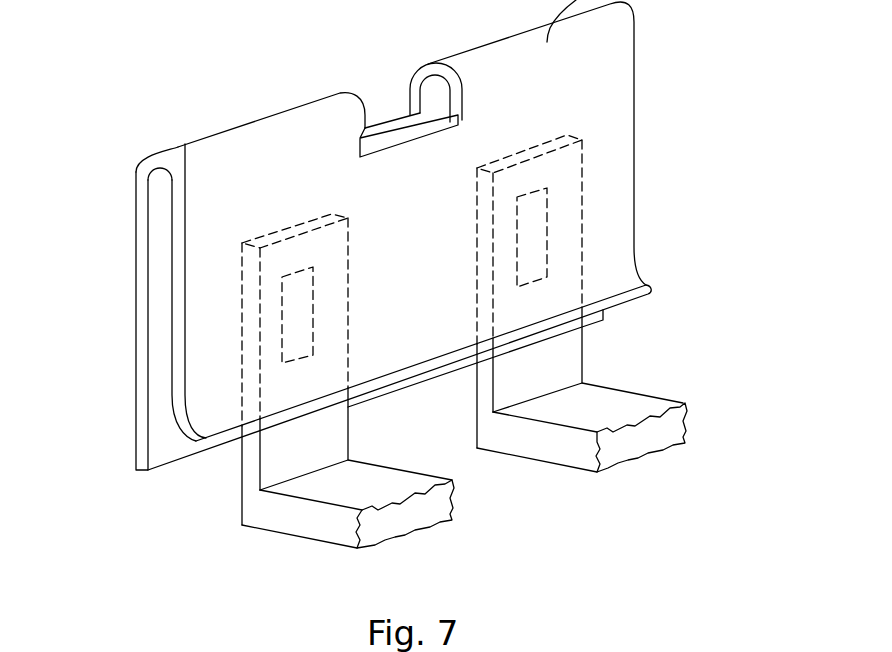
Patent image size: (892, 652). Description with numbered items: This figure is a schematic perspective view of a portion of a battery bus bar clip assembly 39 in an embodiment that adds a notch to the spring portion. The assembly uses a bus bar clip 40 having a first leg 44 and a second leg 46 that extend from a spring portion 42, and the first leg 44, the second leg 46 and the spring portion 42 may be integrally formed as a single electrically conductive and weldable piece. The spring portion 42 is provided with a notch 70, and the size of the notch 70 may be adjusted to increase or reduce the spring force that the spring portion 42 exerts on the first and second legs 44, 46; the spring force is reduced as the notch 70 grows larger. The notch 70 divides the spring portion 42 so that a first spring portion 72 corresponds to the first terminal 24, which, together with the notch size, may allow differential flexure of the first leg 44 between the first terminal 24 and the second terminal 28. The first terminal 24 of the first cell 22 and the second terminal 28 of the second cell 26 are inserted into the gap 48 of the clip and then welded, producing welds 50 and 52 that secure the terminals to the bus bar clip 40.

The battery bus bar clip assembly 39 is at (680, 52).
The bus bar clip 40 is at (212, 85).
The spring portion 42 is at (293, 158).
The first leg 44 is at (607, 233).
The second leg 46 is at (157, 303).
The gap 48 is at (173, 447).
The weld 50 is at (290, 323).
The weld 52 is at (533, 248).
The notch 70 is at (387, 113).
The first spring portion 72 is at (217, 163).
The first terminal 24 is at (294, 440).
The second terminal 28 is at (557, 362).
The first cell 22 is at (363, 497).
The second cell 26 is at (605, 410).